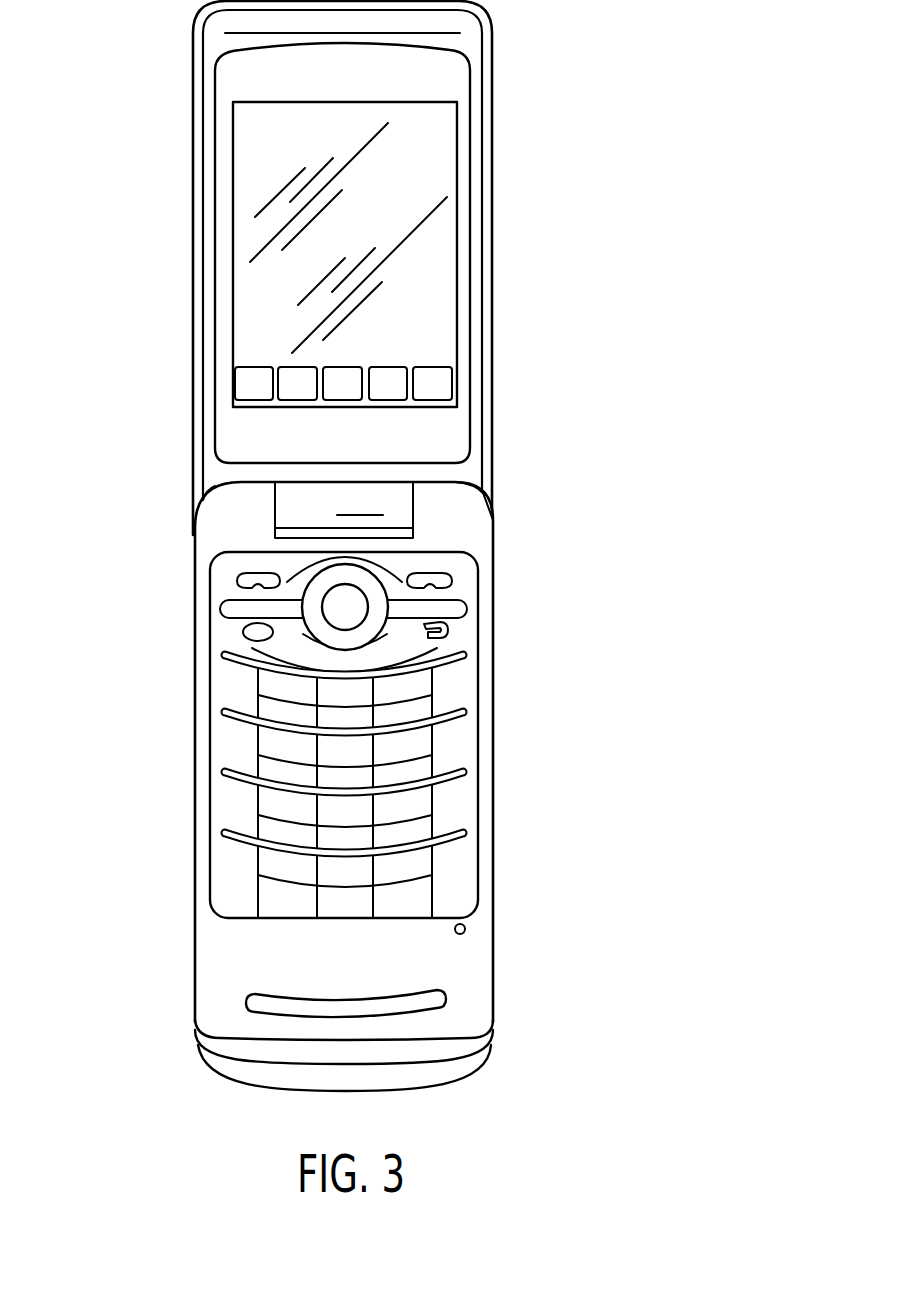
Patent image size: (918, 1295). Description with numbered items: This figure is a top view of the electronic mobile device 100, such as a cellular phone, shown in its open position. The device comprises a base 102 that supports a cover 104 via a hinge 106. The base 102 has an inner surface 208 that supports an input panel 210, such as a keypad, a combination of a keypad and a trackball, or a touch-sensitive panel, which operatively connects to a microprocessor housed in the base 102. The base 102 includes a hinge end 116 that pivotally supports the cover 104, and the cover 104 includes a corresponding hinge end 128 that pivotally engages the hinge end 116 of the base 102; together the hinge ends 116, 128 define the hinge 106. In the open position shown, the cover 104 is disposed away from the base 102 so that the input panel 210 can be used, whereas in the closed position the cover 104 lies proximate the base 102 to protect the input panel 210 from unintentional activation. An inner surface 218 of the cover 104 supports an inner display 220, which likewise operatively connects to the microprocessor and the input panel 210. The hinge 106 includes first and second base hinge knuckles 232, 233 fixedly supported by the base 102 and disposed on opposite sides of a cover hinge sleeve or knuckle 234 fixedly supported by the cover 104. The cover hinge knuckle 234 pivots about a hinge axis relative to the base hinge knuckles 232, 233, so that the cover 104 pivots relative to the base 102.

The electronic mobile device 100 is at (346, 546).
The base 102 is at (329, 754).
The cover 104 is at (327, 268).
The hinge 106 is at (219, 513).
The hinge end 116 is at (493, 533).
The hinge end 128 is at (493, 480).
The inner surface 208 is at (465, 953).
The input panel 210 is at (460, 747).
The inner surface 218 is at (433, 75).
The inner display 220 is at (430, 150).
The first base hinge knuckle 232 is at (212, 492).
The second base hinge knuckle 233 is at (462, 480).
The cover hinge knuckle 234 is at (287, 543).